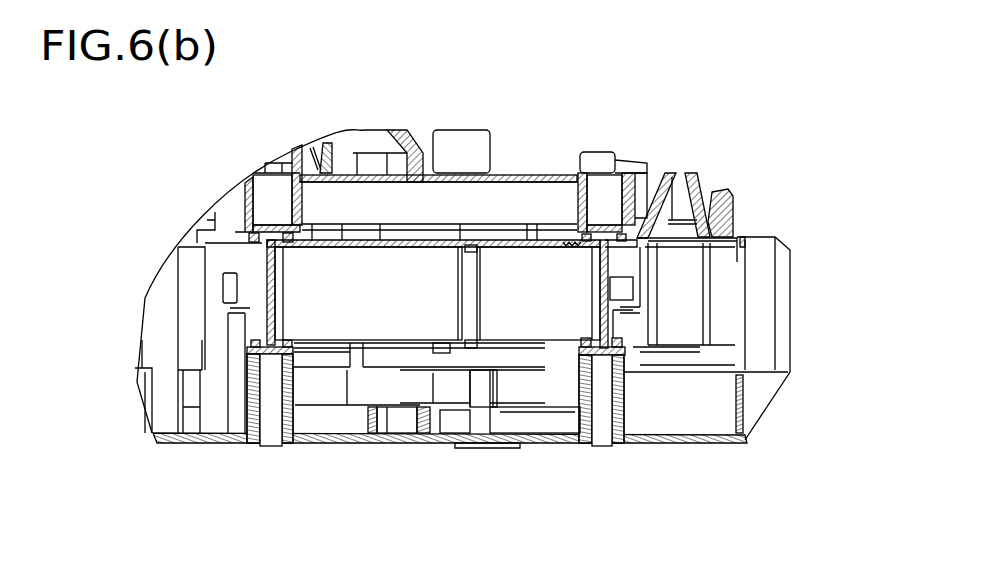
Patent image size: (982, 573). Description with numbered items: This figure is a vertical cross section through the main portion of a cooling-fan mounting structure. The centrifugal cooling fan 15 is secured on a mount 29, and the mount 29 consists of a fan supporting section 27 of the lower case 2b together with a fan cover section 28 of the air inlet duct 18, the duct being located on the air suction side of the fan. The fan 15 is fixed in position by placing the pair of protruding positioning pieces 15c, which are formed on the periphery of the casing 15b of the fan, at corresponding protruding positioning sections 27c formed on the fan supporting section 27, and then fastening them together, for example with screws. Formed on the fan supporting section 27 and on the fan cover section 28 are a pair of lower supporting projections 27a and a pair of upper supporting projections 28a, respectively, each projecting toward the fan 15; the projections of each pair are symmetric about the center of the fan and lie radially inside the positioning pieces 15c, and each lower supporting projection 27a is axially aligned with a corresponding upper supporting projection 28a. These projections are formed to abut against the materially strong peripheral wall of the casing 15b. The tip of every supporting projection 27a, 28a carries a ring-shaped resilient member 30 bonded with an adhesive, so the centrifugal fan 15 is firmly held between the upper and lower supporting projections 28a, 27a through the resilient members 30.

The lower case 2b is at (722, 447).
The centrifugal cooling fan 15 is at (492, 235).
The casing 15b is at (317, 238).
The positioning pieces 15c is at (247, 275).
The air inlet duct 18 is at (533, 173).
The fan supporting section 27 is at (397, 445).
The supporting projections 27a is at (263, 372).
The positioning sections 27c is at (228, 348).
The fan cover section 28 is at (491, 175).
The supporting projections 28a is at (253, 233).
The mount 29 is at (438, 372).
The resilient member 30 is at (183, 262).